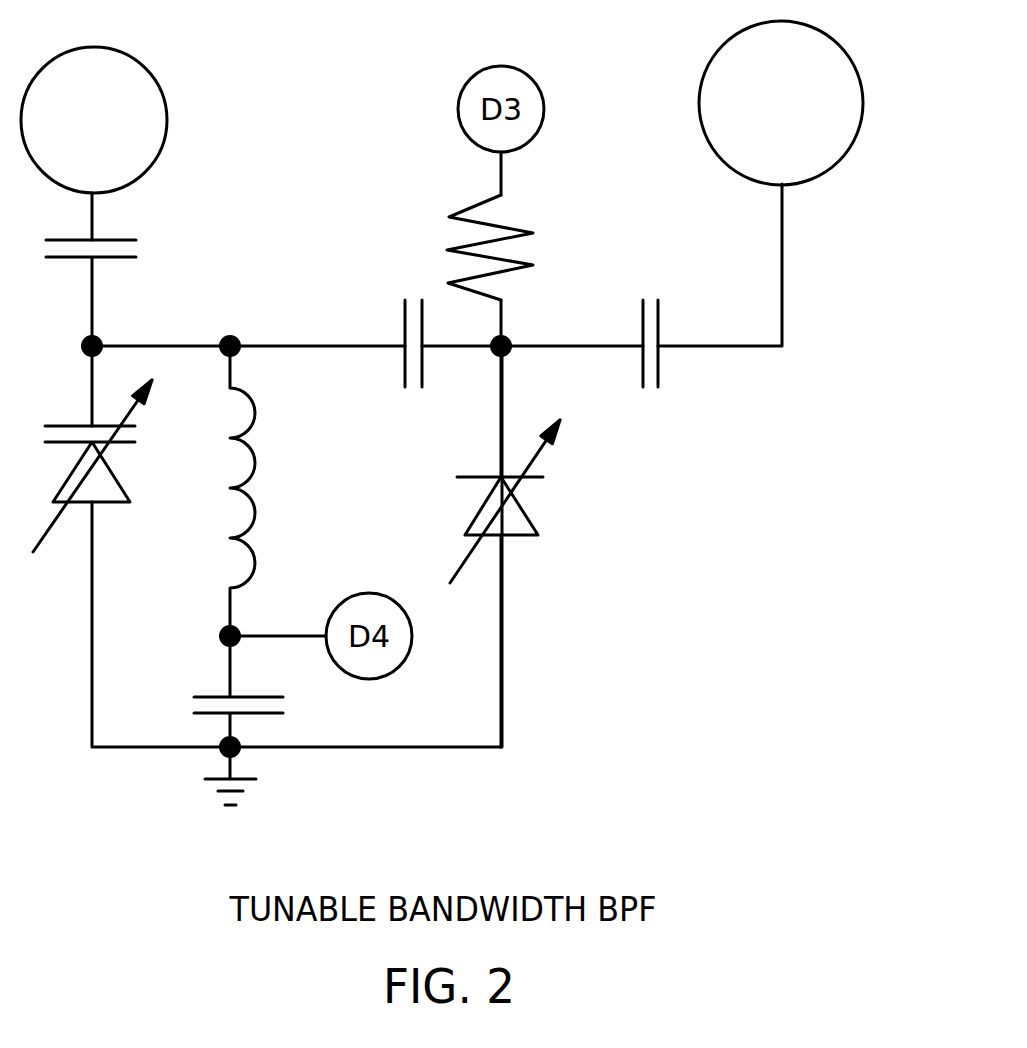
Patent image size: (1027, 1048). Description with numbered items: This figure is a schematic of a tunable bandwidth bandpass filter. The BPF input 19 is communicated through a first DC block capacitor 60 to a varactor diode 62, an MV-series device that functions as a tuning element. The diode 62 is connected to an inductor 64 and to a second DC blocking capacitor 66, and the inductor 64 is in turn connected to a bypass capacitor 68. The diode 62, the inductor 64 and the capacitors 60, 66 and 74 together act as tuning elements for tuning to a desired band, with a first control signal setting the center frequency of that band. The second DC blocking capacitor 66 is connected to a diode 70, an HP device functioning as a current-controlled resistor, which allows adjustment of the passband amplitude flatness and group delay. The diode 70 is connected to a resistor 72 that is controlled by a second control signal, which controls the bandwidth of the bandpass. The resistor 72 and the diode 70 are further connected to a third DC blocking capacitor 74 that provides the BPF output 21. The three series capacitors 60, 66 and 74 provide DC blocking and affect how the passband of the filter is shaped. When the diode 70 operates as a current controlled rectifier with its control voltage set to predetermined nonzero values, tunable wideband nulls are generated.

The BPF input 19 is at (100, 50).
The BPF output 21 is at (795, 25).
The first DC block capacitor 60 is at (118, 240).
The varactor diode 62 is at (128, 502).
The inductor 64 is at (258, 460).
The second DC blocking capacitor 66 is at (404, 365).
The bypass capacitor 68 is at (213, 696).
The diode 70 is at (538, 535).
The resistor 72 is at (518, 232).
The third DC blocking capacitor 74 is at (660, 365).